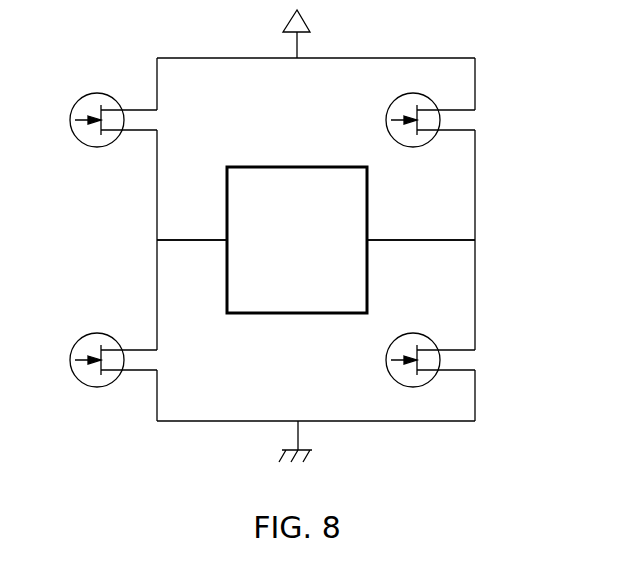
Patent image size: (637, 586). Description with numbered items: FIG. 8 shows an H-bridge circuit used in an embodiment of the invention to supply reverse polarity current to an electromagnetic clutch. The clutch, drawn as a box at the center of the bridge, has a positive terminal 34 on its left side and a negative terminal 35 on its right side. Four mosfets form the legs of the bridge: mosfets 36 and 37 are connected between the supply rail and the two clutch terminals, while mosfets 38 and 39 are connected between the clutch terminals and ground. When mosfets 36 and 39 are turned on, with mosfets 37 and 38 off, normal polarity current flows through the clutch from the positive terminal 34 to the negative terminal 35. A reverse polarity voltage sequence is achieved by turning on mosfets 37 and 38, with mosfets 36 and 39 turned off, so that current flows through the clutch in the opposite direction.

The positive terminal 34 is at (226, 239).
The negative terminal 35 is at (368, 239).
The mosfet 36 is at (80, 101).
The mosfet 37 is at (395, 101).
The mosfet 38 is at (80, 341).
The mosfet 39 is at (396, 381).